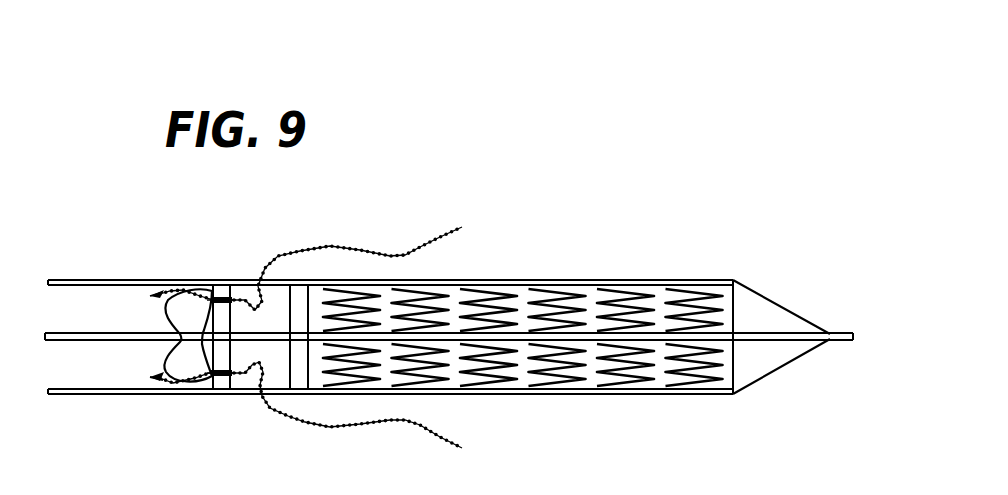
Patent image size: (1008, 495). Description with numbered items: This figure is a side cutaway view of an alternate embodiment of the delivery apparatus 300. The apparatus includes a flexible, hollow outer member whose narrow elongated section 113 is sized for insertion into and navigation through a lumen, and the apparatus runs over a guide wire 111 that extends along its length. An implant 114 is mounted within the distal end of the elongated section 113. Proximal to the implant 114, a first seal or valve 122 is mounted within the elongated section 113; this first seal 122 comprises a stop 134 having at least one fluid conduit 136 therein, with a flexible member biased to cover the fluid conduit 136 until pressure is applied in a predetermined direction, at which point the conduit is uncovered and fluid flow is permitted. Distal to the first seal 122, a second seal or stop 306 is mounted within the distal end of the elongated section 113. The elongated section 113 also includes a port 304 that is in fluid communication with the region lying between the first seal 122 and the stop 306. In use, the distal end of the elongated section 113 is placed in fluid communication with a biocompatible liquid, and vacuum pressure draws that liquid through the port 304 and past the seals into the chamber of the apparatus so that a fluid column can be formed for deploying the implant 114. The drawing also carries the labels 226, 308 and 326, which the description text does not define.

The guide wire 111 is at (82, 332).
The elongated section 113 is at (543, 280).
The implant 114 is at (573, 393).
The first seal 122 is at (155, 395).
The stop 134 is at (222, 282).
The fluid conduit 136 is at (233, 380).
The retrieval loop 226 is at (175, 292).
The delivery apparatus 300 is at (487, 242).
The port 304 is at (264, 284).
The stop 306 is at (301, 394).
The distal tip cone 308 is at (768, 375).
The tether wire junction 326 is at (407, 253).